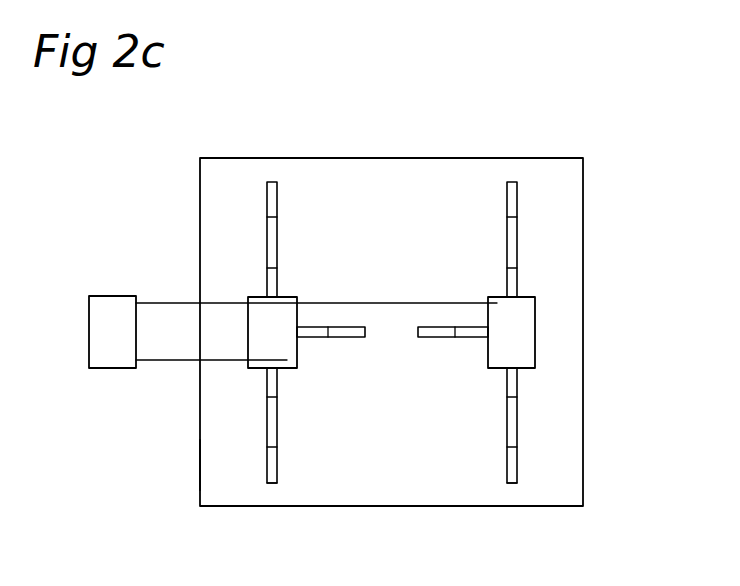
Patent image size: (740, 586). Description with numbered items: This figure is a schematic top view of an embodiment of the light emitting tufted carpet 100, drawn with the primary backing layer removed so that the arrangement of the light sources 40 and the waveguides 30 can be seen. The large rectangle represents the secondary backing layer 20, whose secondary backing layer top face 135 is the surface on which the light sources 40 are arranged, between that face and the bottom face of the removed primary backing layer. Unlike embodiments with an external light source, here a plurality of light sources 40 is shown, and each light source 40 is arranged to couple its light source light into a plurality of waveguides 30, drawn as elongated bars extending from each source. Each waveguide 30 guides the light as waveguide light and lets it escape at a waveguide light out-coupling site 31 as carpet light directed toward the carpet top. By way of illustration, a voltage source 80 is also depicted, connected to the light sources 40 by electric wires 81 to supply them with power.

The light emitting tufted carpet 100 is at (611, 214).
The voltage source 80 is at (93, 293).
The electric wire 81 is at (170, 303).
The light source 40 is at (258, 335).
The waveguide 30 is at (348, 330).
The waveguide light out-coupling site 31 is at (270, 483).
The secondary backing layer 20 is at (383, 435).
The secondary backing layer top face 135 is at (228, 467).